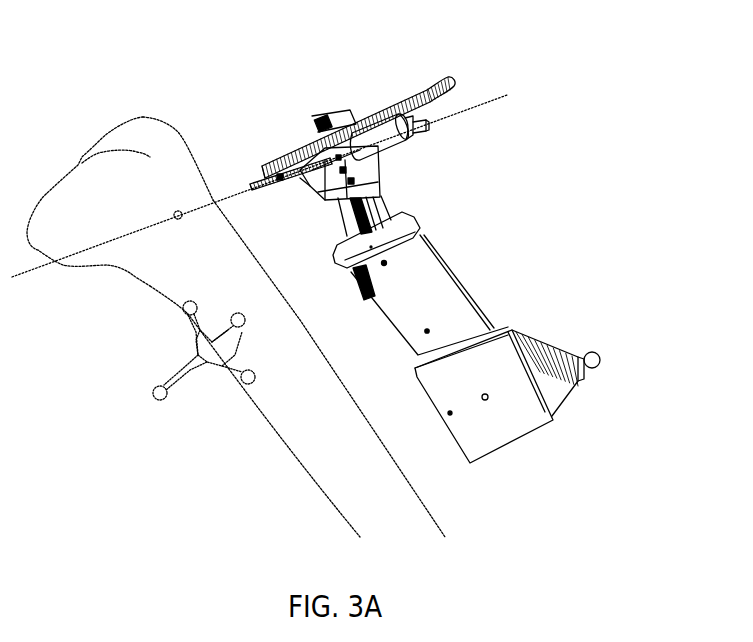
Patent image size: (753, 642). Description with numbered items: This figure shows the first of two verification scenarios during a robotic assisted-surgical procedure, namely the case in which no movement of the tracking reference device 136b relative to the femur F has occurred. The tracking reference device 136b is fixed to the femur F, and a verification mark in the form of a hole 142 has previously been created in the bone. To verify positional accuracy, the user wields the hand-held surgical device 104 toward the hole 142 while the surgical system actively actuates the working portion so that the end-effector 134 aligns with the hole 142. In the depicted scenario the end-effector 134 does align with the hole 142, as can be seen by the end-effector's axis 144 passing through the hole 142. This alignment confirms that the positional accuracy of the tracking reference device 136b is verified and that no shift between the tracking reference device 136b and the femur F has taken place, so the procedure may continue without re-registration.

The hand-held surgical device 104 is at (400, 236).
The end-effector 134 is at (237, 196).
The tracking reference device 136b is at (172, 382).
The hole 142 is at (180, 210).
The end-effector's axis 144 is at (483, 104).
The femur F is at (335, 498).